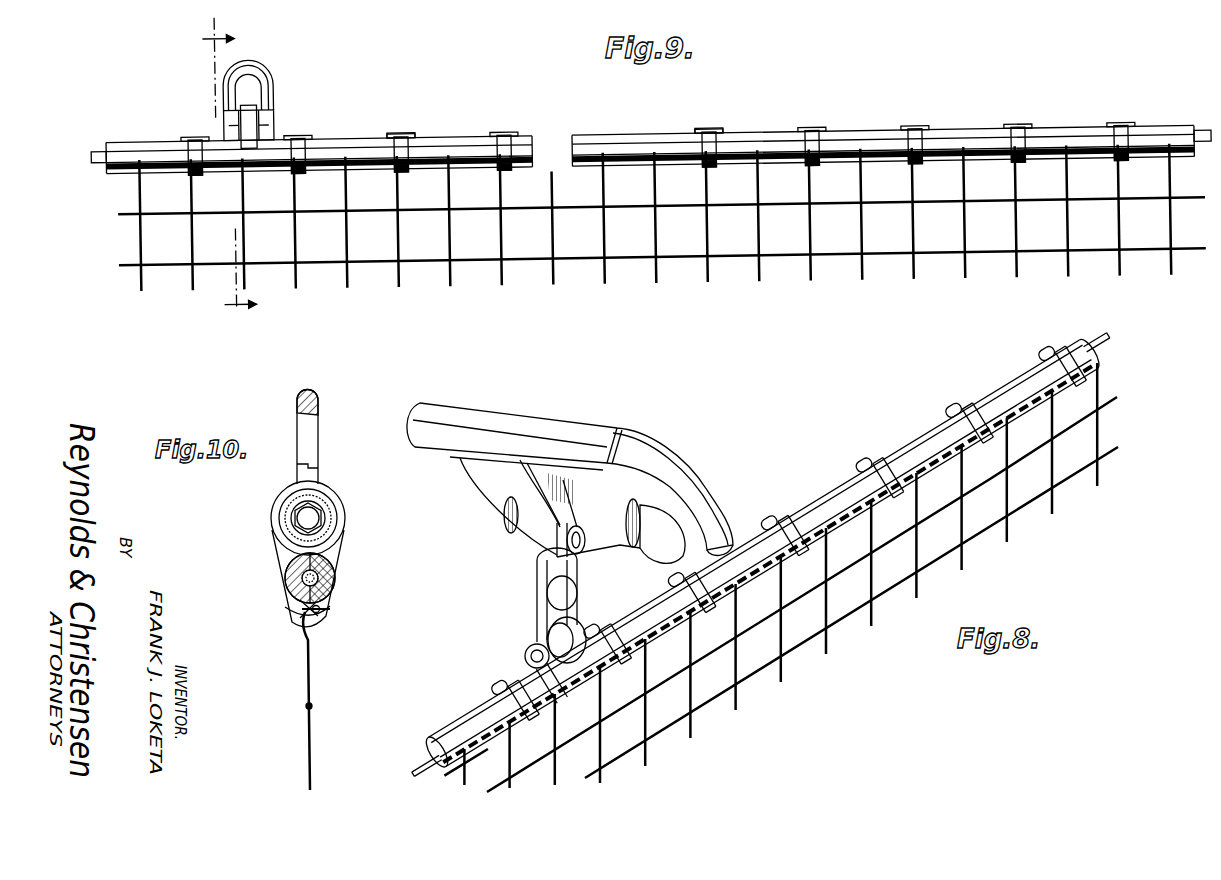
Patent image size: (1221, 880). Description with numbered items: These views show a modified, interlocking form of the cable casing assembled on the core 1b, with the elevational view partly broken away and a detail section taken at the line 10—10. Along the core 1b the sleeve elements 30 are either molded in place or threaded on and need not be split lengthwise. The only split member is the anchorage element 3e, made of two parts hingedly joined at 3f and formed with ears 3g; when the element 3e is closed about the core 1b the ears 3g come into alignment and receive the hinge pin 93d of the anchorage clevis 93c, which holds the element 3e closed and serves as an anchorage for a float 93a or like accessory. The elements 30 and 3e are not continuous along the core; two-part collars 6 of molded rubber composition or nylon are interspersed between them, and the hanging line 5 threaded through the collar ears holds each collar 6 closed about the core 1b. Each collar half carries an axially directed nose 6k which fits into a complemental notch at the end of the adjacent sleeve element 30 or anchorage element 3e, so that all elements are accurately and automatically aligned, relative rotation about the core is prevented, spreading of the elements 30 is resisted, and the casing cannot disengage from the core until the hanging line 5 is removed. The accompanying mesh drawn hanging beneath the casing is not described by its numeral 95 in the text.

In FIG. 9, the core 1b is at (97, 152).
In FIG. 10, the core 1b is at (330, 579).
In FIG. 8, the core 1b is at (413, 757).
In FIG. 9, the anchorage element 3e is at (275, 147).
In FIG. 10, the anchorage element 3e is at (293, 571).
In FIG. 8, the anchorage element 3e is at (543, 713).
In FIG. 10, the hinge 3f is at (302, 602).
In FIG. 9, the ears 3g is at (230, 130).
In FIG. 10, the ears 3g is at (338, 547).
In FIG. 8, the ears 3g is at (585, 621).
In FIG. 9, the hanging line 5 is at (120, 175).
In FIG. 10, the hanging line 5 is at (302, 624).
In FIG. 8, the hanging line 5 is at (430, 780).
In FIG. 9, the two-part collar 6 is at (312, 181).
In FIG. 8, the two-part collar 6 is at (782, 510).
In FIG. 9, the nose 6k is at (720, 134).
In FIG. 8, the nose 6k is at (804, 513).
In FIG. 9, the section line 10— 10 is at (222, 173).
In FIG. 9, the sleeve element 30 is at (153, 150).
In FIG. 8, the sleeve element 30 is at (460, 720).
In FIG. 8, the float 93a is at (547, 427).
In FIG. 9, the anchorage clevis 93c is at (274, 80).
In FIG. 10, the anchorage clevis 93c is at (318, 431).
In FIG. 8, the anchorage clevis 93c is at (537, 605).
In FIG. 10, the hinge pin 93d is at (312, 516).
In FIG. 9, the wire mesh 95 is at (650, 236).
In FIG. 10, the wire mesh 95 is at (304, 708).
In FIG. 8, the wire mesh 95 is at (925, 574).